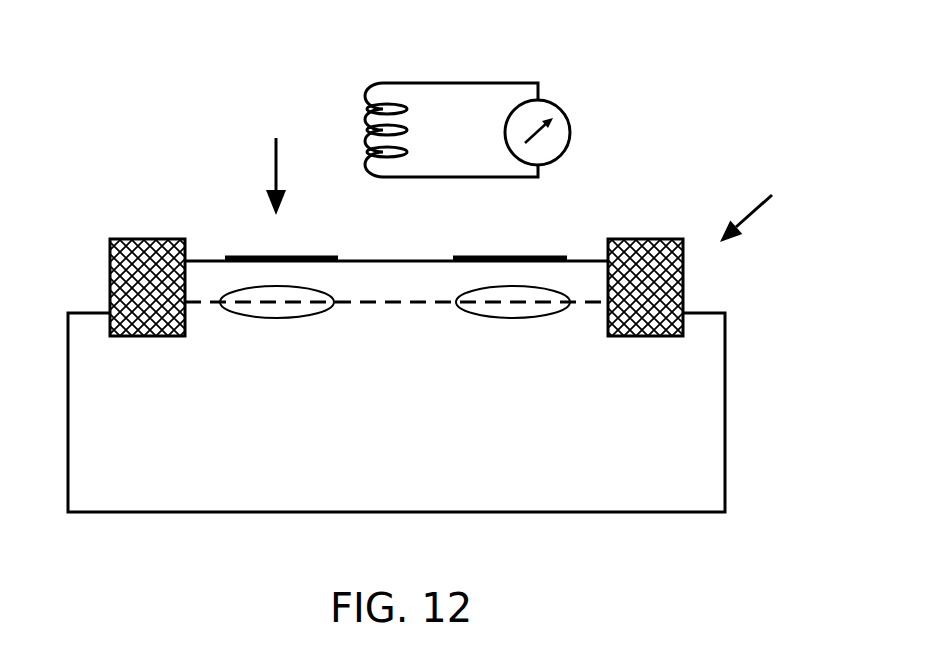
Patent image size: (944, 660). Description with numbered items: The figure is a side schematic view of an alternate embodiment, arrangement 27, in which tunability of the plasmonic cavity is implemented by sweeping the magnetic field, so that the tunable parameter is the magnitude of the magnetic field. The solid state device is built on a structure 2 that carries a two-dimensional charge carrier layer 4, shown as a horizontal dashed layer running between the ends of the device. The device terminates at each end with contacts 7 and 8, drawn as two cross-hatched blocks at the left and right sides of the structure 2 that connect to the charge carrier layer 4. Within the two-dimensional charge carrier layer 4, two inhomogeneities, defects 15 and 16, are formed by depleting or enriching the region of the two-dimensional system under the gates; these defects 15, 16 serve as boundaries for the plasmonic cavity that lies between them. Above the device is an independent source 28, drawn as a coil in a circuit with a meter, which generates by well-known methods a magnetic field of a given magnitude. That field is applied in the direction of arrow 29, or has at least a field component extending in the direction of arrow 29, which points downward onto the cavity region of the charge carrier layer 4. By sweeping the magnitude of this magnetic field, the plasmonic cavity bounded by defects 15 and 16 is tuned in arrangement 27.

The structure 2 is at (152, 500).
The two-dimensional charge carrier layer 4 is at (398, 305).
The contact 7 is at (133, 258).
The contact 8 is at (642, 260).
The defect 15 is at (265, 318).
The defect 16 is at (522, 320).
The arrangement 27 is at (771, 199).
The independent source 28 is at (365, 95).
The arrow 29 is at (272, 165).